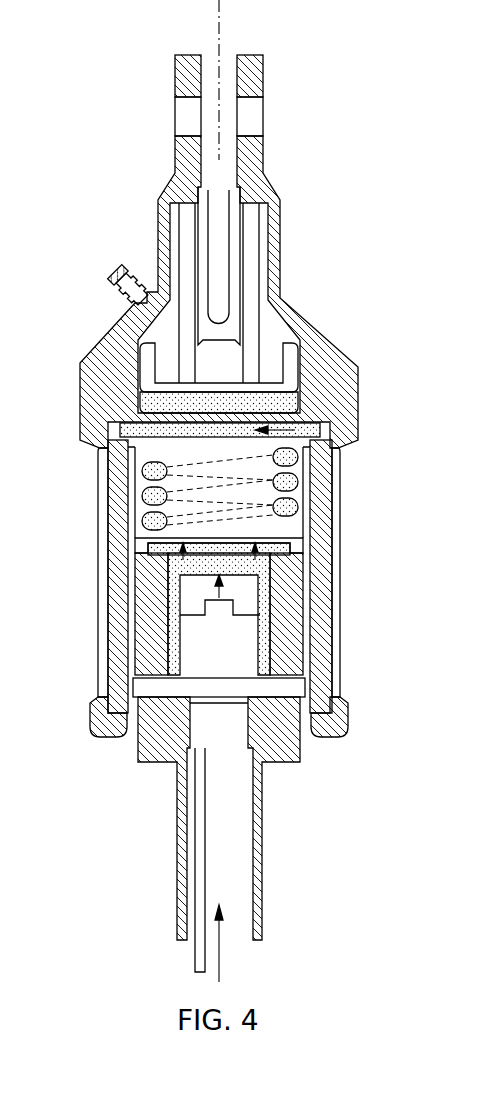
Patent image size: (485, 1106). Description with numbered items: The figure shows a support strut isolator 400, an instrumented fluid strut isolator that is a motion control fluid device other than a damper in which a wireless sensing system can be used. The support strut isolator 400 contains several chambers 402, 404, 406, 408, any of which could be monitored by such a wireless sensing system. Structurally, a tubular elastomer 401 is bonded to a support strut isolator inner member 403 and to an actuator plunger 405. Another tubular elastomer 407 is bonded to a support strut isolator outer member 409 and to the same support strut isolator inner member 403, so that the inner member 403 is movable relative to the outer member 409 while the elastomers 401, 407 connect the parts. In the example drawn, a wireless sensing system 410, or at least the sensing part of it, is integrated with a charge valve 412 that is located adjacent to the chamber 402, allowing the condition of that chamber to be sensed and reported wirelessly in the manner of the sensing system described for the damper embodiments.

The support strut isolator 400 is at (265, 68).
The tubular elastomer 401 is at (300, 605).
The chamber 402 is at (273, 342).
The support strut isolator inner member 403 is at (287, 745).
The chamber 404 is at (138, 398).
The actuator plunger 405 is at (218, 556).
The chamber 406 is at (150, 470).
The tubular elastomer 407 is at (120, 605).
The chamber 408 is at (285, 542).
The support strut isolator outer member 409 is at (97, 712).
The wireless sensing system 410 is at (112, 268).
The charge valve 412 is at (130, 282).